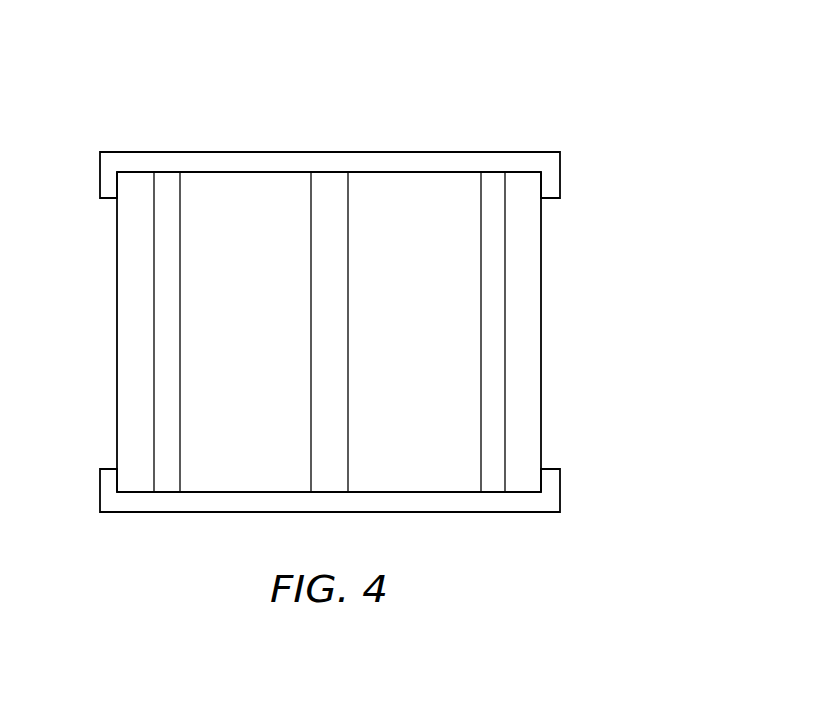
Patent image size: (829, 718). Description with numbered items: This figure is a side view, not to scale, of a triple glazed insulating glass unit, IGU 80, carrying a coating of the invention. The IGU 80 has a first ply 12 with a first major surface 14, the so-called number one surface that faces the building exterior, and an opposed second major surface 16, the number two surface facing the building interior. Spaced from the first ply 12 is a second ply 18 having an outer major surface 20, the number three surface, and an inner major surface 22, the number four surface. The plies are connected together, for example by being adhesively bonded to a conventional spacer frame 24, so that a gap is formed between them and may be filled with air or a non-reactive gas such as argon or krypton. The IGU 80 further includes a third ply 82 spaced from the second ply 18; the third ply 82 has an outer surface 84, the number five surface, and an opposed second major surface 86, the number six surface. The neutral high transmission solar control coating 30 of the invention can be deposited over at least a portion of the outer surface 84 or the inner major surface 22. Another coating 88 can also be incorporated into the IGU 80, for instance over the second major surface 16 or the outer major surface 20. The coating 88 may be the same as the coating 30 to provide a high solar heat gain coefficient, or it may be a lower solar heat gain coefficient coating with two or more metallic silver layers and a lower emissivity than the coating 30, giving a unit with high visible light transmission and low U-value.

The triple glazed IGU 80 is at (588, 78).
The first ply 12 is at (523, 477).
The first major surface 14 is at (542, 361).
The second major surface 16 is at (503, 455).
The second ply 18 is at (328, 192).
The outer major surface 20 is at (349, 351).
The inner major surface 22 is at (309, 378).
The spacer frame 24 is at (537, 152).
The solar control coating 30 is at (168, 190).
The third ply 82 is at (128, 480).
The outer surface 84 is at (156, 333).
The second major surface 86 is at (116, 344).
The coating 88 is at (492, 187).